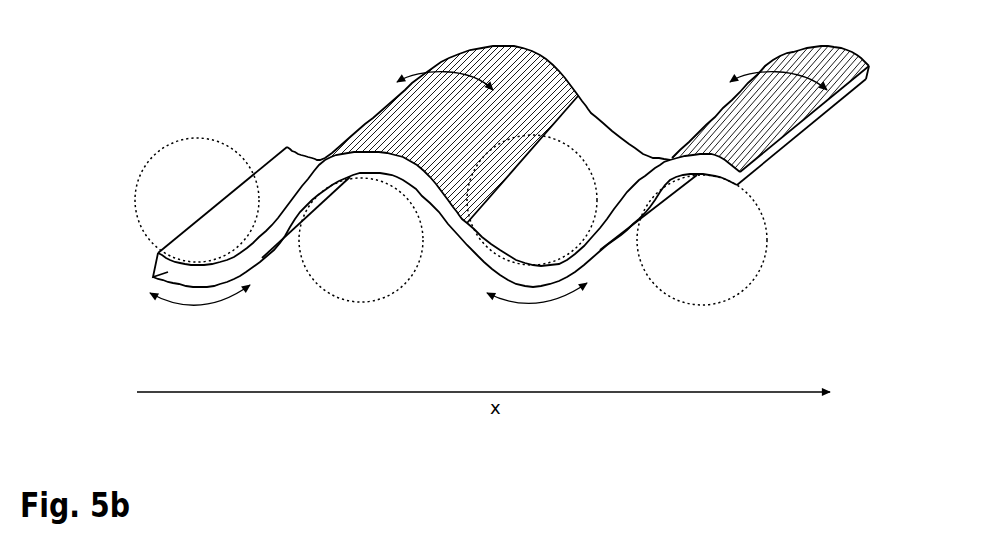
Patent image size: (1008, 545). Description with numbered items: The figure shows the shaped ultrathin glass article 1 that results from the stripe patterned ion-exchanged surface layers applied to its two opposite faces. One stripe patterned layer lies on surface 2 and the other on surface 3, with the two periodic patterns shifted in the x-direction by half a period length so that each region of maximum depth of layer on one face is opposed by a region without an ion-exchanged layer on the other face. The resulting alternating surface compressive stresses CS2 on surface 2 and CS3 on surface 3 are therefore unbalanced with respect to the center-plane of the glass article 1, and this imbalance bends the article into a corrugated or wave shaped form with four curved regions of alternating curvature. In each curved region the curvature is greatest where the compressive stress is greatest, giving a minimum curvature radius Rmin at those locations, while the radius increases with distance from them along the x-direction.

The glass article 1 is at (498, 191).
The surface 2 is at (270, 170).
The surface 3 is at (301, 219).
The surface compressive stress CS2 is at (403, 72).
The surface compressive stress CS3 is at (368, 313).
The minimum curvature radius Rmin is at (223, 143).